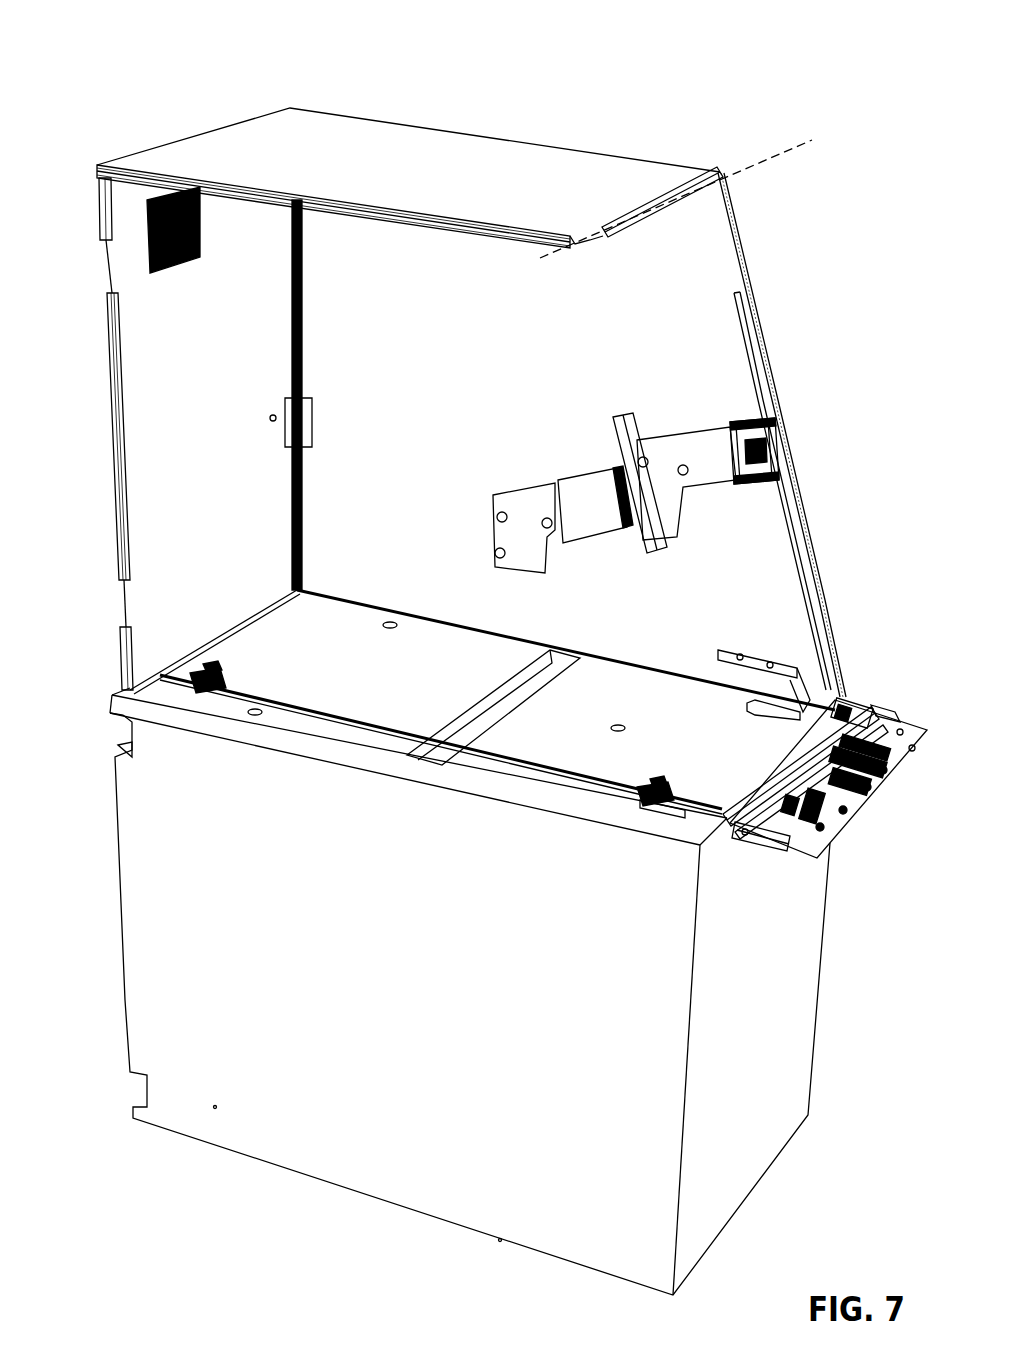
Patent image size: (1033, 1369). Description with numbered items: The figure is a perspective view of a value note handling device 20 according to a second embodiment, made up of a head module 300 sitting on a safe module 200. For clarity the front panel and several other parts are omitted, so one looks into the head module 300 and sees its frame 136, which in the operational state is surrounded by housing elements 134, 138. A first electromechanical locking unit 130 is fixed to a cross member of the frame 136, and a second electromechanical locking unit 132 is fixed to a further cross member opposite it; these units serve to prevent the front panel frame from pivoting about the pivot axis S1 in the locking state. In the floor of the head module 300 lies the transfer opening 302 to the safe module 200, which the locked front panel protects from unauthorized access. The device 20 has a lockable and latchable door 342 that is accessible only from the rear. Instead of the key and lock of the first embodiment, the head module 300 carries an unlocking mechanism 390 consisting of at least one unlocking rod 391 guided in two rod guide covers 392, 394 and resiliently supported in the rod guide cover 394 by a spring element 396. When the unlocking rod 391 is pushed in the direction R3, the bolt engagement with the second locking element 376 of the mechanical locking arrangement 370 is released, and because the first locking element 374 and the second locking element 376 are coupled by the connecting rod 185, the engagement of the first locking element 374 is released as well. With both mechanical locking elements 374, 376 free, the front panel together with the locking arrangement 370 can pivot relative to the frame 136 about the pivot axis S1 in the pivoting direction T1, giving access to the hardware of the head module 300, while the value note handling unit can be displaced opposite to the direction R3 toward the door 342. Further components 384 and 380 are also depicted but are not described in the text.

The value note handling device 20 is at (200, 95).
The housing element 138 is at (448, 140).
The pivoting direction T1 is at (757, 190).
The pivot axis S1 is at (790, 150).
The housing element 134 is at (737, 255).
The frame 136 is at (766, 322).
The first electromechanical locking unit 130 is at (712, 418).
The second electromechanical locking unit 132 is at (576, 462).
The door 342 is at (128, 268).
The head module 300 is at (98, 470).
The hinge block 384 is at (285, 432).
The unlocking mechanism 390 is at (316, 745).
The unlocking rod 391 is at (345, 722).
The rod guide cover 392 is at (222, 682).
The rod guide cover 394 is at (645, 785).
The transfer opening 302 is at (500, 716).
The direction R3 is at (505, 838).
The connecting rod 185 is at (805, 760).
The mechanical locking arrangement 370 is at (905, 735).
The slide rail 380 is at (865, 717).
The first locking element 374 is at (845, 698).
The second locking element 376 is at (763, 862).
The spring element 396 is at (657, 805).
The safe module 200 is at (98, 978).